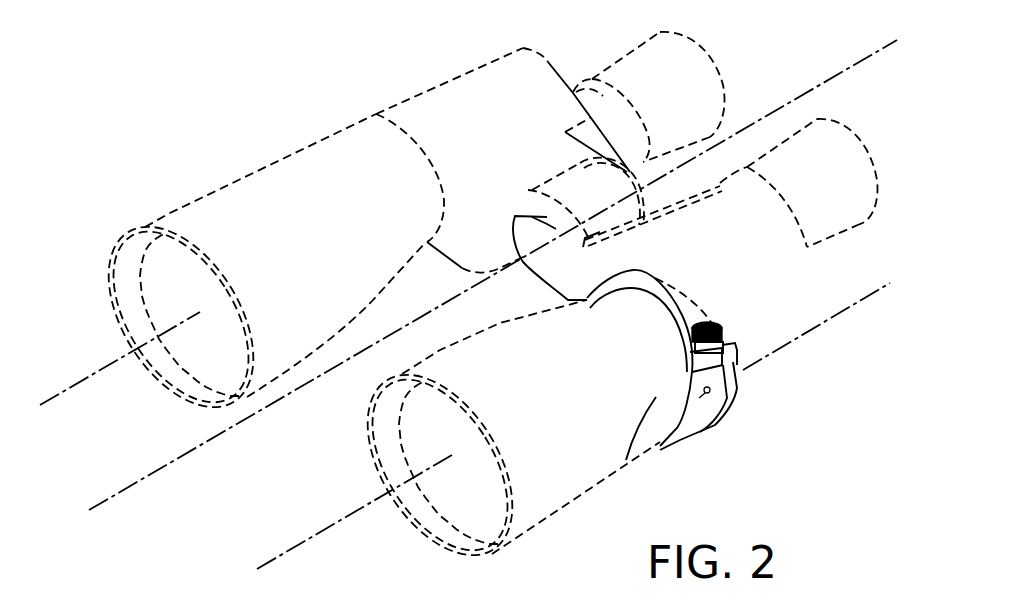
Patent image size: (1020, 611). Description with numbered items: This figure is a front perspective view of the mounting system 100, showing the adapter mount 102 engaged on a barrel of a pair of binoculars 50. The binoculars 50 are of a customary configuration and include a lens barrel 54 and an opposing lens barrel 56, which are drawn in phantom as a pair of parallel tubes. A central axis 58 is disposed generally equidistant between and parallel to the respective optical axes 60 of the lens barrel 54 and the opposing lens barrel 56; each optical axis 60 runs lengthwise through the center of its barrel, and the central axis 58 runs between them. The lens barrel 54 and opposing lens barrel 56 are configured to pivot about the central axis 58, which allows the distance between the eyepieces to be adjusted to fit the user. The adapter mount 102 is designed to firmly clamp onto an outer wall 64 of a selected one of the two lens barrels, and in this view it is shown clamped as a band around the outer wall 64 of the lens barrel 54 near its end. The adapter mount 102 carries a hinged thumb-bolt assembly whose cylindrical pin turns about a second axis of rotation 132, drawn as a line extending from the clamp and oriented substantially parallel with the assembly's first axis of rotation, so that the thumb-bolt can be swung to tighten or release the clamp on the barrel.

The binoculars 50 is at (413, 96).
The lens barrel 54 is at (588, 495).
The opposing lens barrel 56 is at (301, 151).
The central axis 58 is at (842, 76).
The optical axes 60 is at (65, 392).
The outer wall 64 is at (626, 462).
The mounting system 100 is at (730, 387).
The adapter mount 102 is at (665, 297).
The second axis of rotation 132 is at (840, 313).